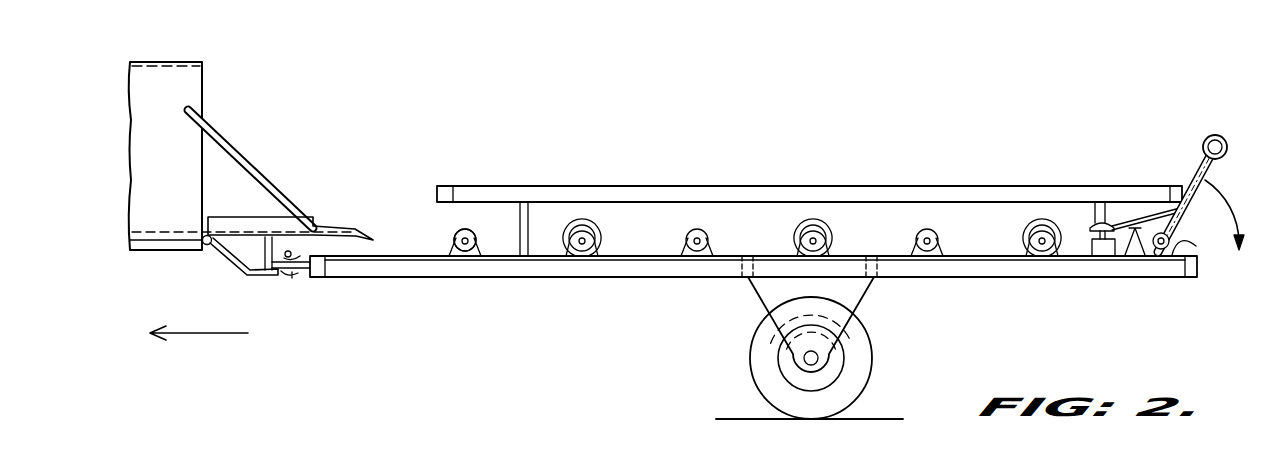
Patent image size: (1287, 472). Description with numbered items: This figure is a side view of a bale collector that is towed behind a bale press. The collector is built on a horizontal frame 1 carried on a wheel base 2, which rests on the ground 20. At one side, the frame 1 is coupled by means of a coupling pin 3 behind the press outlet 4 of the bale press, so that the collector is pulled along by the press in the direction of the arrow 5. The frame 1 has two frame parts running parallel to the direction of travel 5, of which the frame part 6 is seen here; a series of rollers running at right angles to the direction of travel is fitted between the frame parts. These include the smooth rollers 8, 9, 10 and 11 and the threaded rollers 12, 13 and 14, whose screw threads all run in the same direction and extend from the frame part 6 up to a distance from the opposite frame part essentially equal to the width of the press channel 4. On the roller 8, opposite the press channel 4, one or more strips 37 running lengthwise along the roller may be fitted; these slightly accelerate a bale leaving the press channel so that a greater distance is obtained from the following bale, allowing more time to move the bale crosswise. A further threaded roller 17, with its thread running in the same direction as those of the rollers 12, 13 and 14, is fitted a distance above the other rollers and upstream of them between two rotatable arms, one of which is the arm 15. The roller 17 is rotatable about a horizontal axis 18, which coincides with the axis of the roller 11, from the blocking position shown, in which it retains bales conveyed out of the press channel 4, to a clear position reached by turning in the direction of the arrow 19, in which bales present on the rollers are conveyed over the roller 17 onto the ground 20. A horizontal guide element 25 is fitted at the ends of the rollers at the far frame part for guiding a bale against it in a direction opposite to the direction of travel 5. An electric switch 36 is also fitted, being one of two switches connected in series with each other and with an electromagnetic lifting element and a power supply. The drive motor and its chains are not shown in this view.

The horizontal frame 1 is at (471, 287).
The wheel base 2 is at (762, 297).
The coupling pin 3 is at (286, 276).
The press outlet 4 is at (189, 83).
The direction of travel 5 is at (194, 337).
The frame part 6 is at (524, 268).
The smooth roller 8 is at (478, 238).
The smooth roller 9 is at (709, 230).
The smooth roller 10 is at (941, 237).
The smooth roller 11 is at (1185, 249).
The threaded roller 12 is at (600, 230).
The threaded roller 13 is at (831, 230).
The threaded roller 14 is at (1059, 225).
The rotatable arm 15 is at (1223, 176).
The threaded roller 17 is at (1228, 138).
The horizontal axis 18 is at (1176, 236).
The direction of turning 19 is at (1238, 209).
The ground 20 is at (880, 418).
The horizontal guide element 25 is at (686, 197).
The electric switch 36 is at (1090, 257).
The strip 37 is at (453, 232).